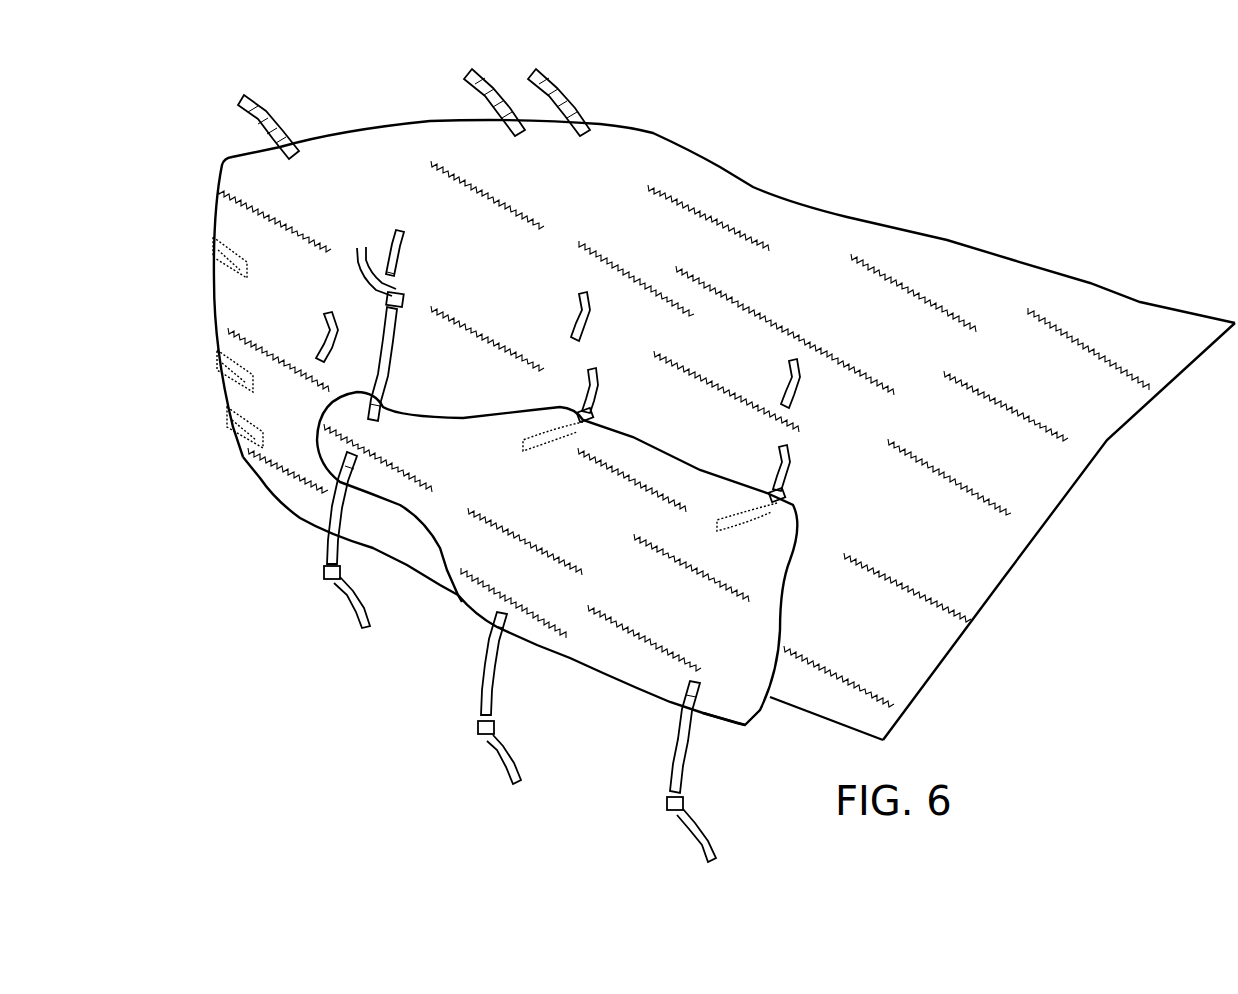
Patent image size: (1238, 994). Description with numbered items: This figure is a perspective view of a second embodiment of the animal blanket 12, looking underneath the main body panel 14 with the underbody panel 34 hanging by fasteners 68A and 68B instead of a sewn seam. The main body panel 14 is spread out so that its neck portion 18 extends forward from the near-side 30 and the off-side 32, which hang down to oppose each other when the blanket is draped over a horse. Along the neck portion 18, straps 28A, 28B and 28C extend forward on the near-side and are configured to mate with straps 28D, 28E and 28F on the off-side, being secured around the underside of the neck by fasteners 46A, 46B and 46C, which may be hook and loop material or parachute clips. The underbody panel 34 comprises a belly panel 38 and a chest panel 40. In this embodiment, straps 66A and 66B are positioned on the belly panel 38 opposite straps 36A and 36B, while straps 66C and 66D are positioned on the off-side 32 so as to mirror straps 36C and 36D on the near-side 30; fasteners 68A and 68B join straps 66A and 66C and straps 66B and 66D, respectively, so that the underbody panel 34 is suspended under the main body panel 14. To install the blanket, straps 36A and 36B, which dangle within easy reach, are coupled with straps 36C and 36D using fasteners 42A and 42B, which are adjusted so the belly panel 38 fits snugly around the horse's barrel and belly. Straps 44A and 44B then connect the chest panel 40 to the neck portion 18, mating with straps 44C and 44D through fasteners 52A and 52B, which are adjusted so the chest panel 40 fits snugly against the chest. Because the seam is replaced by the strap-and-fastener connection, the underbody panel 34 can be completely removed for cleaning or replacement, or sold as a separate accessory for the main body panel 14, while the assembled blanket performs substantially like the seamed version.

The animal blanket 12 is at (805, 170).
The main body panel 14 is at (987, 266).
The neck portion 18 is at (380, 170).
The strap 28A is at (280, 138).
The strap 28B is at (503, 108).
The strap 28C is at (580, 118).
The strap 28D is at (213, 243).
The strap 28E is at (217, 353).
The strap 28F is at (230, 420).
The near-side 30 is at (922, 253).
The off-side 32 is at (812, 697).
The underbody panel 34 is at (712, 622).
The strap 36A is at (487, 680).
The strap 36B is at (680, 735).
The strap 36C is at (590, 312).
The strap 36D is at (800, 387).
The belly panel 38 is at (566, 520).
The chest panel 40 is at (405, 444).
The fastener 42A is at (477, 733).
The fastener 42B is at (670, 802).
The strap 44A is at (393, 350).
The strap 44B is at (333, 545).
The strap 44C is at (330, 333).
The strap 44D is at (407, 250).
The fastener 46A is at (260, 112).
The fastener 46B is at (480, 83).
The fastener 46C is at (540, 80).
The fastener 52A is at (402, 297).
The fastener 52B is at (323, 575).
The strap 66A is at (550, 443).
The strap 66B is at (747, 527).
The strap 66C is at (600, 380).
The strap 66D is at (793, 465).
The fastener 68A is at (592, 417).
The fastener 68B is at (786, 498).